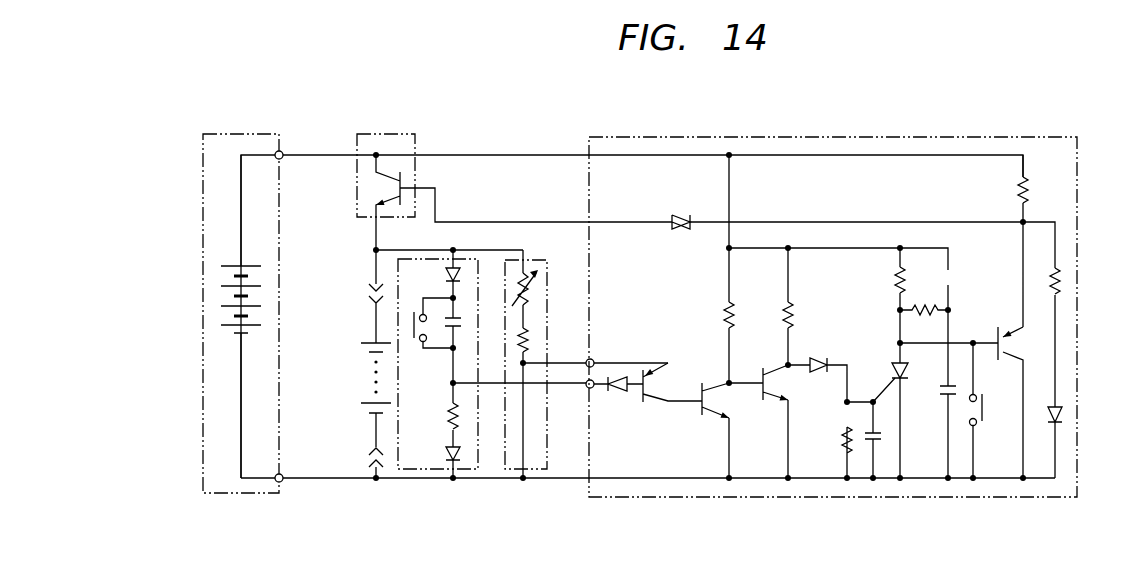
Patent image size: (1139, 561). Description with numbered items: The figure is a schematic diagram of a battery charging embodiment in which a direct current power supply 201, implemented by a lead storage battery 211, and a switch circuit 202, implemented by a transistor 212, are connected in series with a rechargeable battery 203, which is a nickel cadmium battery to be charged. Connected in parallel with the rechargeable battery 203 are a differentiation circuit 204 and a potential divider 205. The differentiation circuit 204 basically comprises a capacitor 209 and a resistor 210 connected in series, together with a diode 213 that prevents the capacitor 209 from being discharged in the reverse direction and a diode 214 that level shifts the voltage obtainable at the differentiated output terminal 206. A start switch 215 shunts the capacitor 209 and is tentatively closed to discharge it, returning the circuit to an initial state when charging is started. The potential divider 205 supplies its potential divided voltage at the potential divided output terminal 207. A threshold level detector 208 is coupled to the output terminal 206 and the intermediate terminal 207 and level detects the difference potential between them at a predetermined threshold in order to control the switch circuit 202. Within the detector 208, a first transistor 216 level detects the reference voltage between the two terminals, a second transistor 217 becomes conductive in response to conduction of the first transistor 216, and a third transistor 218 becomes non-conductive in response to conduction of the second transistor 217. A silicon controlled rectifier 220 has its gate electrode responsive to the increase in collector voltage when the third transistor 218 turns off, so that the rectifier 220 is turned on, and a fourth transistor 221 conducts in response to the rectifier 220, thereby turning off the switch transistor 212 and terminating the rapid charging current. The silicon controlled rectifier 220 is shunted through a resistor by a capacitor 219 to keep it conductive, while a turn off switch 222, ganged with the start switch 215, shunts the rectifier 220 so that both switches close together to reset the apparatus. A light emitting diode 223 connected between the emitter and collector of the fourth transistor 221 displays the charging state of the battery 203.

The direct current power supply 201 is at (213, 286).
The switch circuit 202 is at (359, 192).
The rechargeable battery 203 is at (360, 372).
The differentiation circuit 204 is at (436, 386).
The potential divider 205 is at (531, 470).
The differentiated output terminal 206 is at (587, 390).
The potential divided output terminal 207 is at (587, 358).
The threshold level detector 208 is at (864, 283).
The capacitor 209 is at (466, 301).
The resistor 210 is at (447, 418).
The lead storage battery 211 is at (222, 314).
The transistor 212 is at (374, 186).
The diode 213 is at (432, 279).
The diode 214 is at (461, 456).
The start switch 215 is at (417, 355).
The first transistor 216 is at (651, 405).
The second transistor 217 is at (710, 416).
The third transistor 218 is at (770, 401).
The capacitor 219 is at (942, 396).
The silicon controlled rectifier 220 is at (893, 369).
The fourth transistor 221 is at (1000, 325).
The turn off switch 222 is at (978, 426).
The light emitting diode 223 is at (1063, 412).